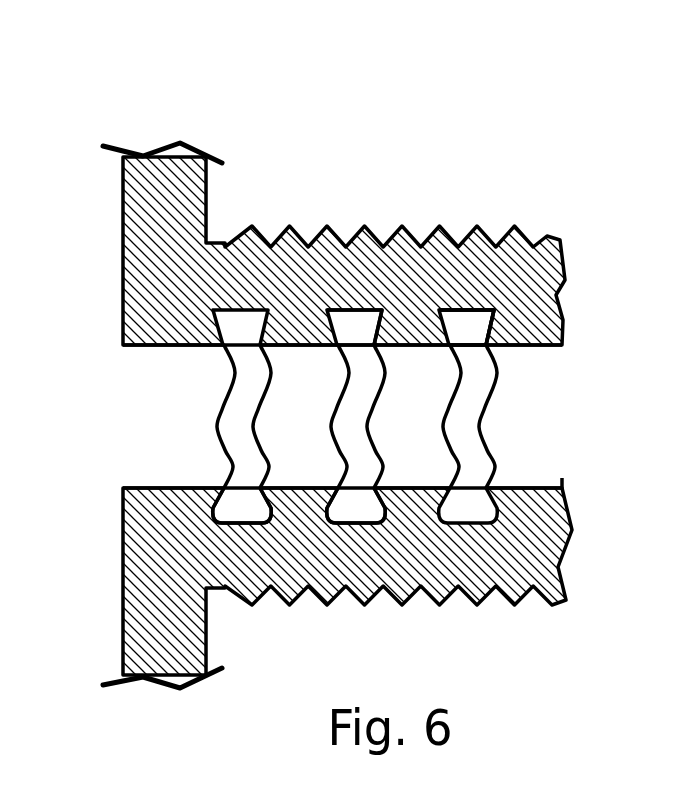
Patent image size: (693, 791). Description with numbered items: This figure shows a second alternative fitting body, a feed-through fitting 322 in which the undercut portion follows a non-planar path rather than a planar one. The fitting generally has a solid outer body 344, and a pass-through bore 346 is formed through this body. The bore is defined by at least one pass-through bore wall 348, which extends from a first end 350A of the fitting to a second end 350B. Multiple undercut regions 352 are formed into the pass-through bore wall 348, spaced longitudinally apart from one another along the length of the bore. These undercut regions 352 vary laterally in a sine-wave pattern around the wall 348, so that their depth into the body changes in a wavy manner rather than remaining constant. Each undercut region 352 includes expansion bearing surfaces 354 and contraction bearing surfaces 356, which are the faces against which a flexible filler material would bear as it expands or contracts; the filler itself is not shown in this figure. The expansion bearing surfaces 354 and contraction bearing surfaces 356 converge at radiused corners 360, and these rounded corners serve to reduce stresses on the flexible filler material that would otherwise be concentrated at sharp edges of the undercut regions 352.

The feed-through fitting 322 is at (540, 138).
The solid outer body 344 is at (152, 230).
The pass-through bore 346 is at (192, 373).
The pass-through bore wall 348 is at (167, 488).
The first end 350A is at (150, 445).
The second end 350B is at (508, 405).
The undercut regions 352 is at (245, 300).
The expansion bearing surfaces 354 is at (370, 310).
The contraction bearing surfaces 356 is at (445, 320).
The radiused corners 360 is at (355, 525).